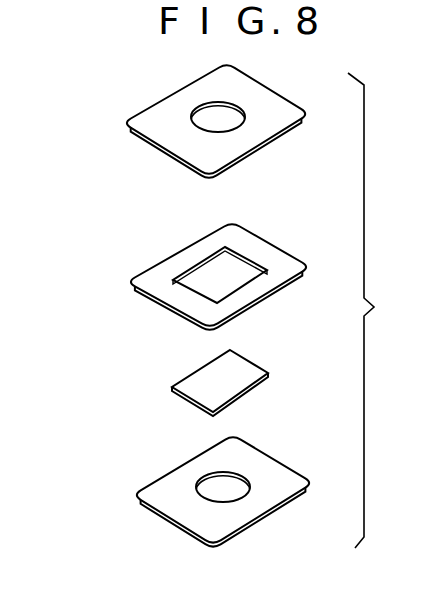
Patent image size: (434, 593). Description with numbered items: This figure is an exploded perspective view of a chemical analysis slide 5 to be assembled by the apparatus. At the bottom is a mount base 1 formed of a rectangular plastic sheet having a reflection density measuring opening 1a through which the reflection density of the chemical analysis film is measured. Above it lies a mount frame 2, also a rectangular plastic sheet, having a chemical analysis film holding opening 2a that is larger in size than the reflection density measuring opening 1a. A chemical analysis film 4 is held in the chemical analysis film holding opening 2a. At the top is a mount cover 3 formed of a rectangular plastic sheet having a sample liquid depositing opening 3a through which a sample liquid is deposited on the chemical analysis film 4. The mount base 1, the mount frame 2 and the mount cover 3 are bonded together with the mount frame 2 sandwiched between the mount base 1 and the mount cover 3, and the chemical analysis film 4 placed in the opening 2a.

The chemical analysis slide 5 is at (100, 166).
The mount cover 3 is at (298, 105).
The sample liquid depositing opening 3a is at (232, 126).
The mount frame 2 is at (293, 254).
The chemical analysis film holding opening 2a is at (242, 282).
The chemical analysis film 4 is at (247, 372).
The mount base 1 is at (290, 473).
The reflection density measuring opening 1a is at (242, 494).